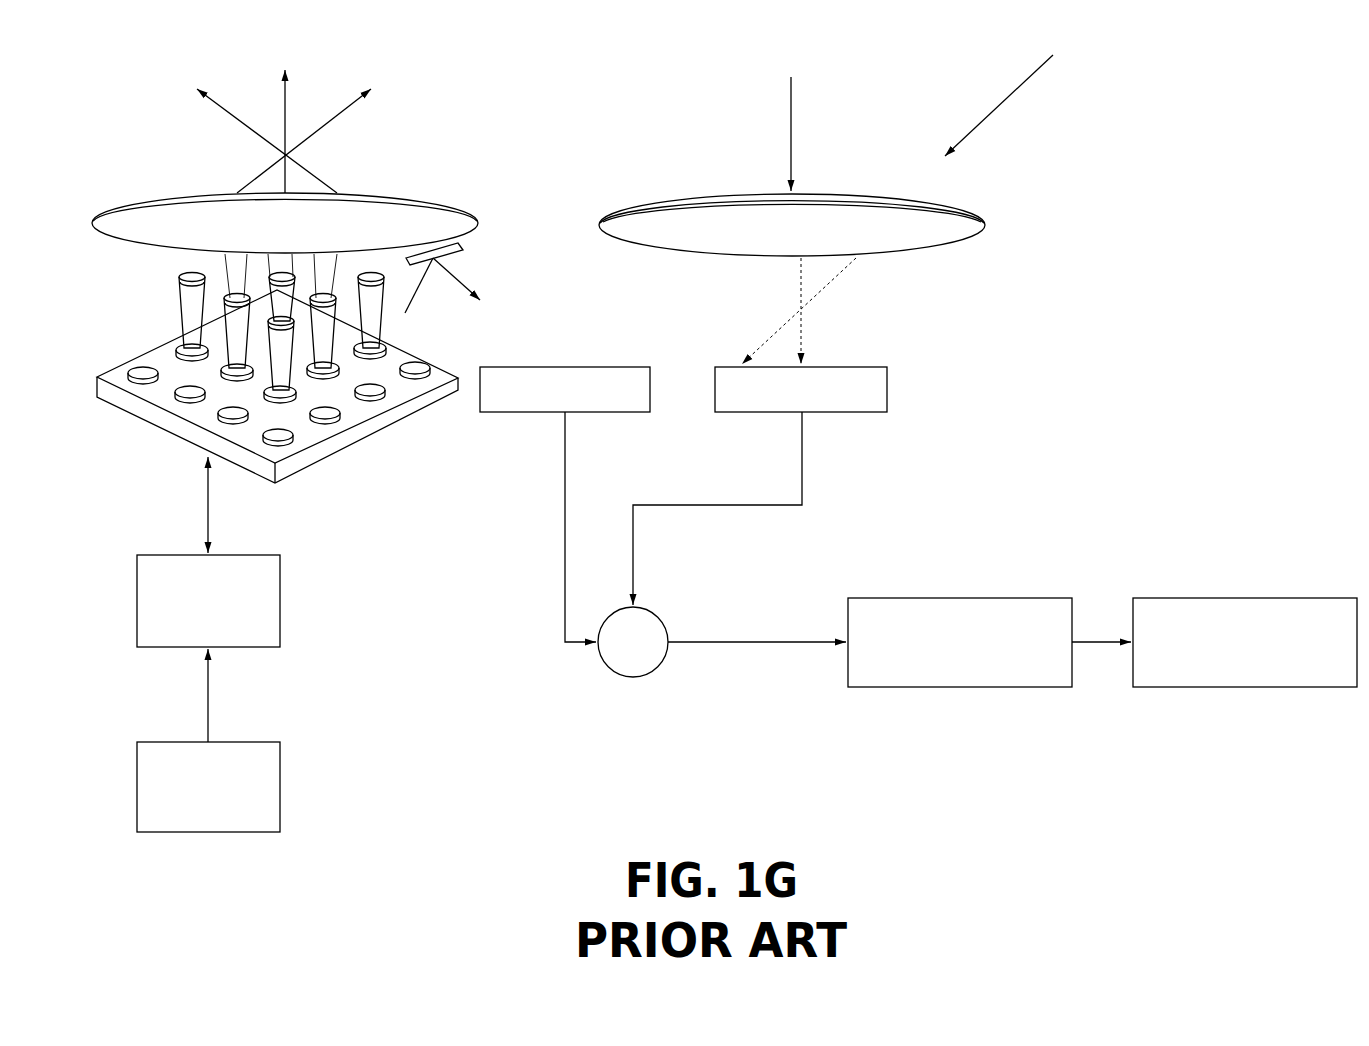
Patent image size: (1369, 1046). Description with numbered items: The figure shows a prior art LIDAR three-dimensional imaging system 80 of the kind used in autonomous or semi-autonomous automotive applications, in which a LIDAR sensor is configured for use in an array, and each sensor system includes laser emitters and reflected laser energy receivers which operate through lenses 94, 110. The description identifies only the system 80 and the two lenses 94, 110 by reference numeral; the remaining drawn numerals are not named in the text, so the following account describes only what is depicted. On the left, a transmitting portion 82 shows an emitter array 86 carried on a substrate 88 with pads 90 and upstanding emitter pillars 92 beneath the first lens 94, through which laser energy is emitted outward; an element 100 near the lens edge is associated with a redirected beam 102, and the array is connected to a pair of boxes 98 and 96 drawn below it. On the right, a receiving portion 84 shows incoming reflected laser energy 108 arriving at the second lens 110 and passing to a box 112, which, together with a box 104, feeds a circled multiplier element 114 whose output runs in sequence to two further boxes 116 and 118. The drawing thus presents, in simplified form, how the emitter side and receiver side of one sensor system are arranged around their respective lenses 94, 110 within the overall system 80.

The system 80 is at (1112, 82).
The light source subsystem 82 is at (135, 140).
The detection subsystem 84 is at (1088, 262).
The emitter array 86 is at (133, 328).
The substrate 88 is at (305, 470).
The emitter pads 90 is at (150, 378).
The emitter pillars 92 is at (353, 313).
The lens 94 is at (393, 222).
The power supply 96 is at (280, 790).
The emitter driver 98 is at (280, 605).
The reflector element 100 is at (462, 258).
The reflected beam 102 is at (460, 276).
The reference detector 104 is at (576, 367).
The incoming light 108 is at (1010, 97).
The lens 110 is at (942, 218).
The detector 112 is at (887, 388).
The multiplier 114 is at (633, 678).
The signal processor 116 is at (946, 598).
The output unit 118 is at (1223, 598).